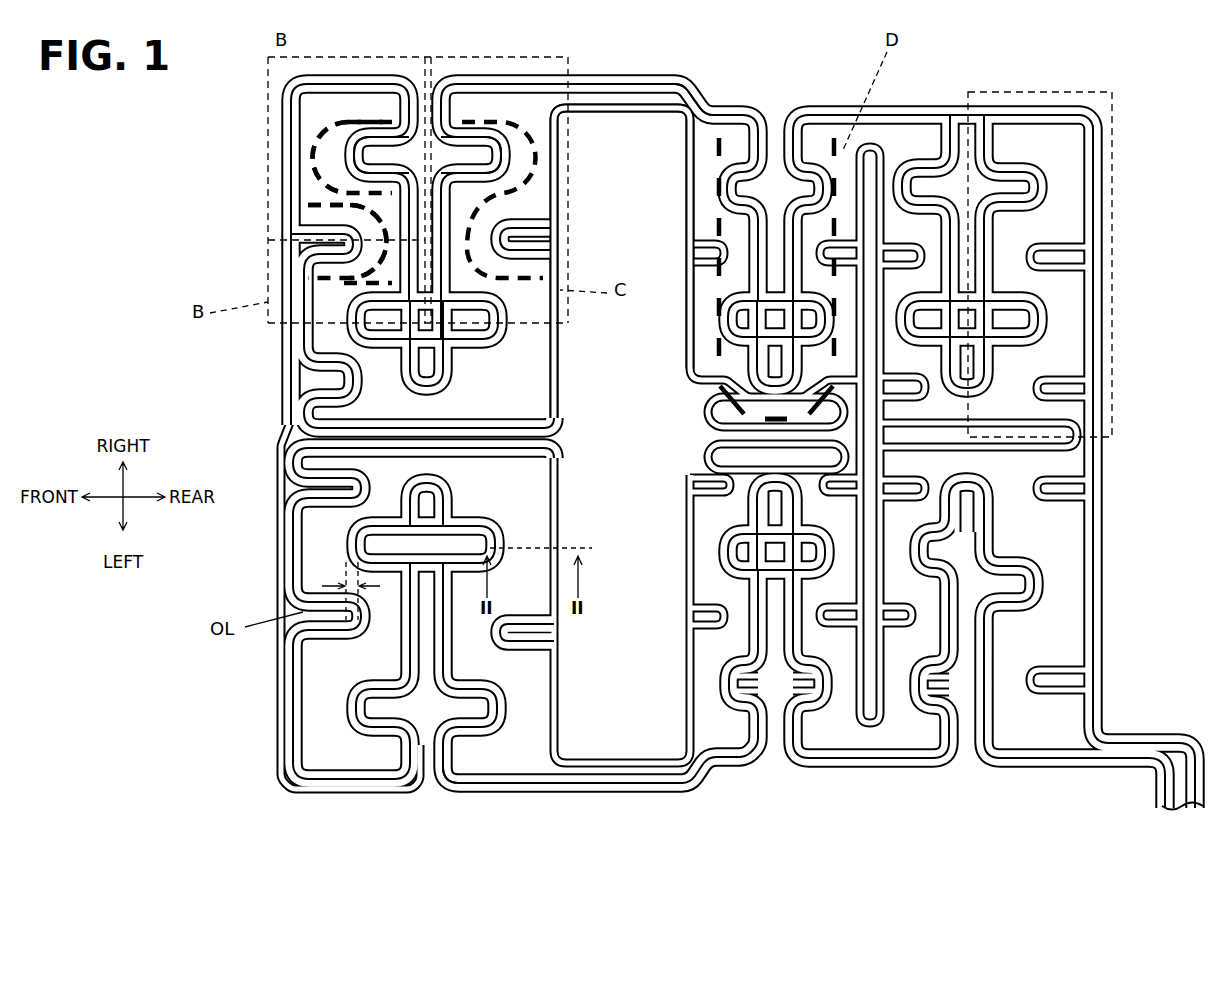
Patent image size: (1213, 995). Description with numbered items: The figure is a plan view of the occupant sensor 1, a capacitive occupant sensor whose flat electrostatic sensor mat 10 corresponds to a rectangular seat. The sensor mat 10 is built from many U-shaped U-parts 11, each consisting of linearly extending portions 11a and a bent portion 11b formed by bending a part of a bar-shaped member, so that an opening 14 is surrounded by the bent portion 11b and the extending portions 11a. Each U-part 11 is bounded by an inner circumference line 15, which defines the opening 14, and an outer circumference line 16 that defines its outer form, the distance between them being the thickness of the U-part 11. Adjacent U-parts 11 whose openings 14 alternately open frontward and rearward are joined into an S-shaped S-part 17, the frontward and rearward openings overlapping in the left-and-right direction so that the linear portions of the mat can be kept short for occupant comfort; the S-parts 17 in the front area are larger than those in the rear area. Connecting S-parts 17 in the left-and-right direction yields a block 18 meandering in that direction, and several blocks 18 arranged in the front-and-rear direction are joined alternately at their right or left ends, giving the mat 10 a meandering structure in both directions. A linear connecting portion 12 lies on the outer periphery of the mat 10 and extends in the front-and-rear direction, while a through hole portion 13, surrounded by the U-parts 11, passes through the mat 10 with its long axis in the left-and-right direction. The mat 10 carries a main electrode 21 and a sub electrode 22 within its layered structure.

The occupant sensor 1 is at (836, 88).
The sensor mat 10 is at (276, 295).
The U-part 11 is at (268, 133).
The extending portion 11a is at (352, 118).
The bent portion 11b is at (307, 152).
The linear connecting portion 12 is at (659, 77).
The through hole portion 13 is at (672, 135).
The opening 14 is at (392, 152).
The inner circumference line 15 is at (478, 165).
The outer circumference line 16 is at (558, 188).
The S-part 17 is at (448, 58).
The block 18 is at (1090, 92).
The main electrode 21 is at (528, 750).
The sub electrode 22 is at (438, 792).